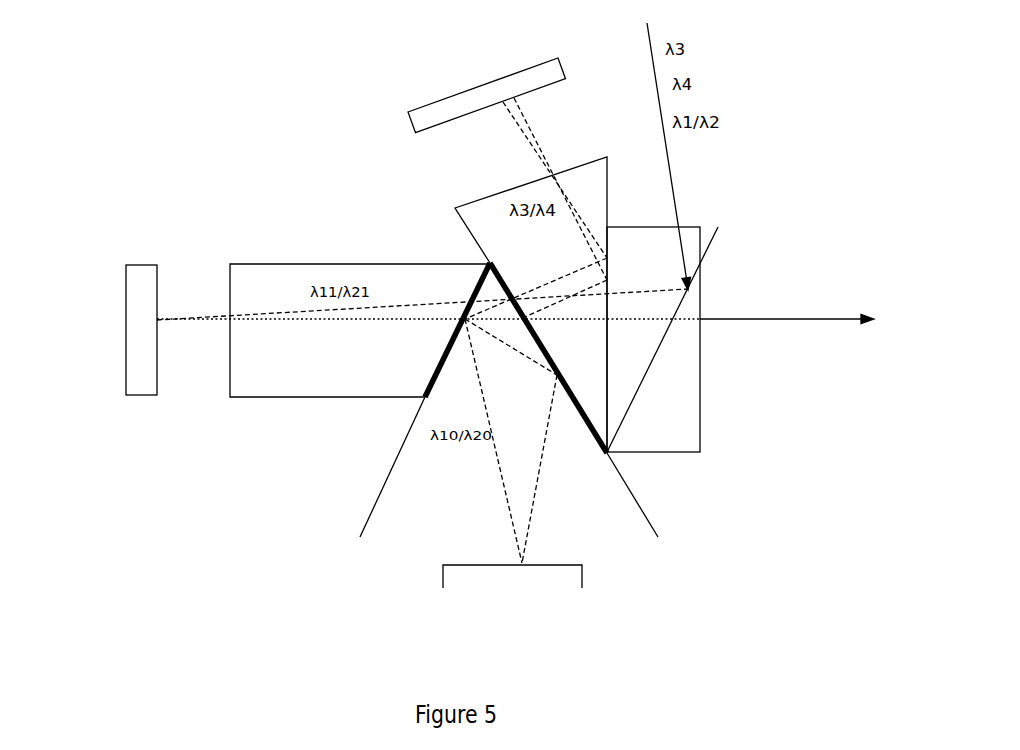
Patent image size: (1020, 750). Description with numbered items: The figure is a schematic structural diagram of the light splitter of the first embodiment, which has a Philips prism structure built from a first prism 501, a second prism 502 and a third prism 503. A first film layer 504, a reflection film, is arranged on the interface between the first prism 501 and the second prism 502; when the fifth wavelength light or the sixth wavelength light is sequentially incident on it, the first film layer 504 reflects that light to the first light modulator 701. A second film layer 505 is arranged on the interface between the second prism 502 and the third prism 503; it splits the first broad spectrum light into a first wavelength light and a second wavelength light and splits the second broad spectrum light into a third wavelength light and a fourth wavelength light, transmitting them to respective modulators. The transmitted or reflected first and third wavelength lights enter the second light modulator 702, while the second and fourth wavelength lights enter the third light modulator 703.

The first prism 501 is at (567, 167).
The second prism 502 is at (642, 522).
The third prism 503 is at (242, 385).
The first film layer 504 is at (488, 263).
The second film layer 505 is at (425, 395).
The first light modulator 701 is at (462, 107).
The second light modulator 702 is at (488, 582).
The third light modulator 703 is at (143, 383).